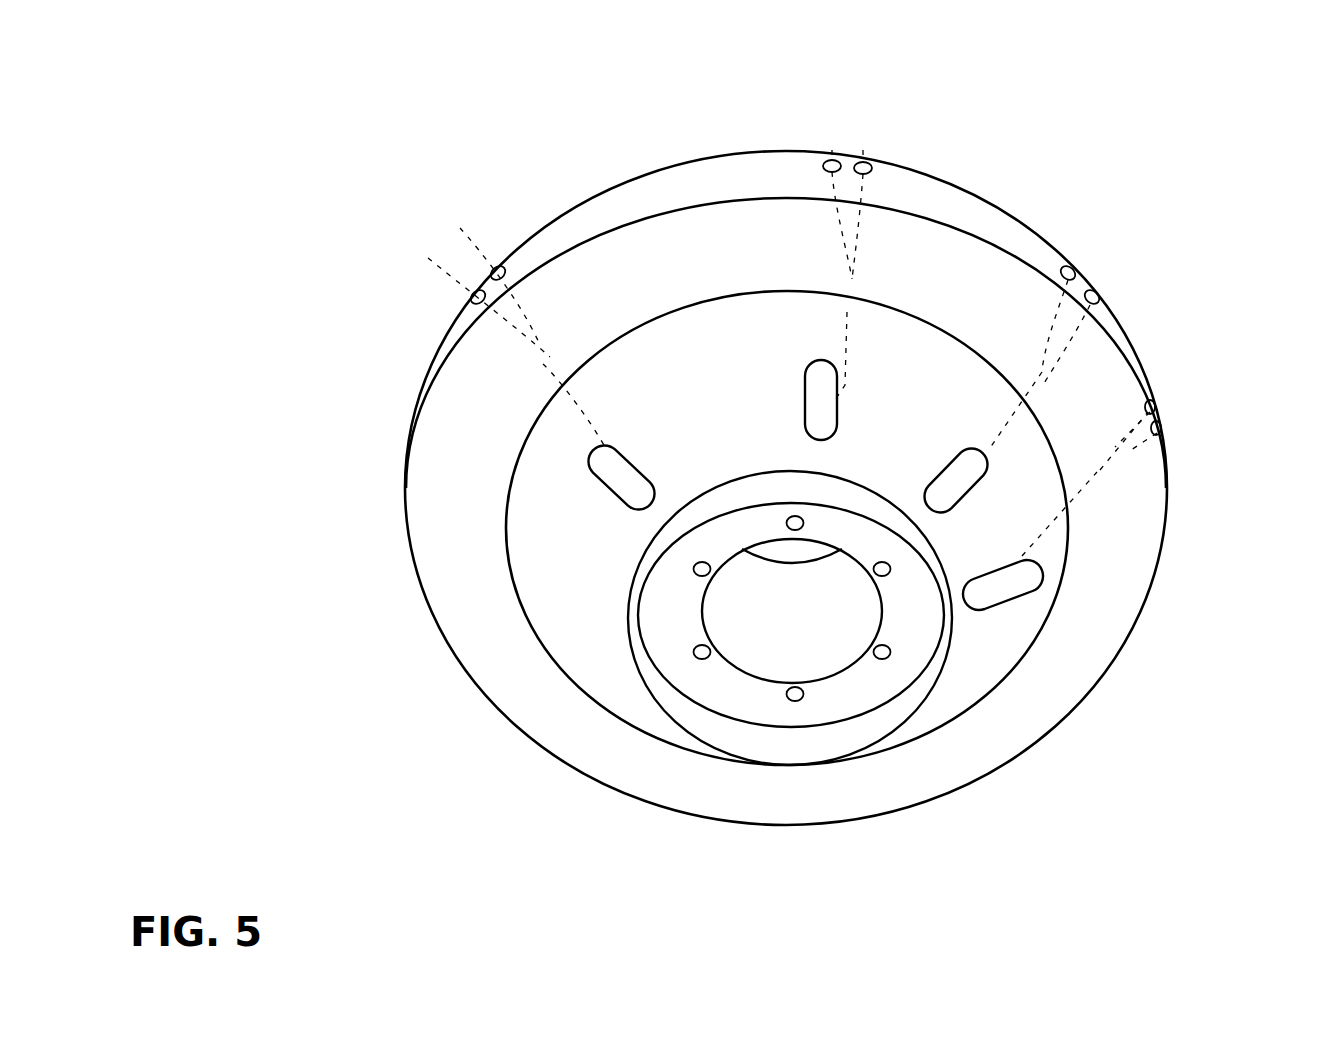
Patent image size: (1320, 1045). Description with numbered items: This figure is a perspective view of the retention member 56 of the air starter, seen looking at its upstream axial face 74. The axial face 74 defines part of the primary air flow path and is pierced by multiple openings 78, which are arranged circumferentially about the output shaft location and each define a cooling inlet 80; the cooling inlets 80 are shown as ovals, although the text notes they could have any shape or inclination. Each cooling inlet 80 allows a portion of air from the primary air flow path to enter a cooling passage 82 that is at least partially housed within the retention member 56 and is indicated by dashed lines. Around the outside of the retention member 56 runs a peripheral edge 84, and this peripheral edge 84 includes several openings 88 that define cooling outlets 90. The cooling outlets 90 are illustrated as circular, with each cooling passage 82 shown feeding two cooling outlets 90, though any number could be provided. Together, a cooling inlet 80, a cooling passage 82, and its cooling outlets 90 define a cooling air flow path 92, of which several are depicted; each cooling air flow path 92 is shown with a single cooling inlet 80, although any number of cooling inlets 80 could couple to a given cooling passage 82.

The retention member 56 is at (414, 67).
The axial face 74 is at (1098, 327).
The opening 78 is at (803, 400).
The cooling inlet 80 is at (757, 402).
The cooling passage 82 is at (847, 277).
The peripheral edge 84 is at (585, 200).
The opening 88 is at (885, 168).
The cooling outlet 90 is at (862, 162).
The cooling air flow path 92 is at (802, 292).